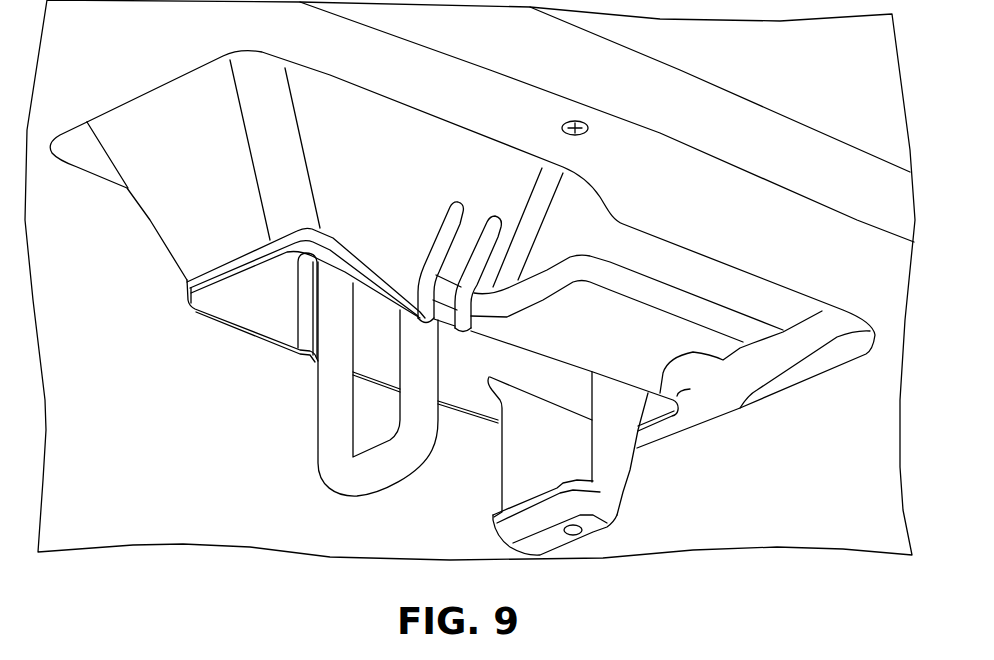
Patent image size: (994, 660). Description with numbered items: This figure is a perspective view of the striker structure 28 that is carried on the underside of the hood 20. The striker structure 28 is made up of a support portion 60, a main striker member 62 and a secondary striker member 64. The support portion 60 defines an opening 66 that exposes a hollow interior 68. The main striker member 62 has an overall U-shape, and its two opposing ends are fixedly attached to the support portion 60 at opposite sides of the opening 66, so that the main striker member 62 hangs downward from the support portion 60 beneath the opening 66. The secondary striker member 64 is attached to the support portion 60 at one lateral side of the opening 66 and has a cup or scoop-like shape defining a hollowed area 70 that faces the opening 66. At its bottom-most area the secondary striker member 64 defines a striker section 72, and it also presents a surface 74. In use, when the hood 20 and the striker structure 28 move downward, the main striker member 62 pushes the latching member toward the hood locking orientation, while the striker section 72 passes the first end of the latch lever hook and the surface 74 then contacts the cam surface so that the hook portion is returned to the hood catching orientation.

The hood 20 is at (762, 140).
The striker structure 28 is at (410, 99).
The support portion 60 is at (593, 220).
The main striker member 62 is at (371, 471).
The secondary striker member 64 is at (627, 473).
The opening 66 is at (240, 333).
The hollow interior 68 is at (377, 353).
The hollowed area 70 is at (538, 457).
The striker section 72 is at (522, 505).
The surface 74 is at (595, 531).